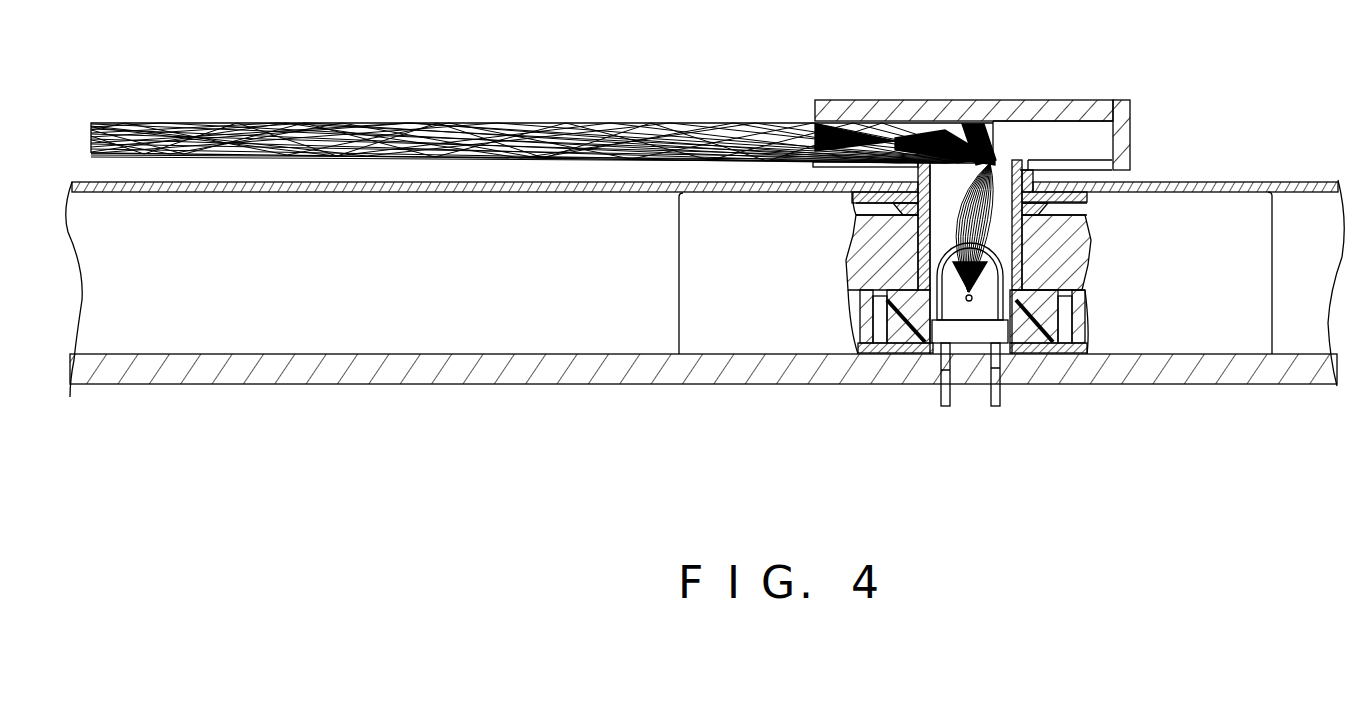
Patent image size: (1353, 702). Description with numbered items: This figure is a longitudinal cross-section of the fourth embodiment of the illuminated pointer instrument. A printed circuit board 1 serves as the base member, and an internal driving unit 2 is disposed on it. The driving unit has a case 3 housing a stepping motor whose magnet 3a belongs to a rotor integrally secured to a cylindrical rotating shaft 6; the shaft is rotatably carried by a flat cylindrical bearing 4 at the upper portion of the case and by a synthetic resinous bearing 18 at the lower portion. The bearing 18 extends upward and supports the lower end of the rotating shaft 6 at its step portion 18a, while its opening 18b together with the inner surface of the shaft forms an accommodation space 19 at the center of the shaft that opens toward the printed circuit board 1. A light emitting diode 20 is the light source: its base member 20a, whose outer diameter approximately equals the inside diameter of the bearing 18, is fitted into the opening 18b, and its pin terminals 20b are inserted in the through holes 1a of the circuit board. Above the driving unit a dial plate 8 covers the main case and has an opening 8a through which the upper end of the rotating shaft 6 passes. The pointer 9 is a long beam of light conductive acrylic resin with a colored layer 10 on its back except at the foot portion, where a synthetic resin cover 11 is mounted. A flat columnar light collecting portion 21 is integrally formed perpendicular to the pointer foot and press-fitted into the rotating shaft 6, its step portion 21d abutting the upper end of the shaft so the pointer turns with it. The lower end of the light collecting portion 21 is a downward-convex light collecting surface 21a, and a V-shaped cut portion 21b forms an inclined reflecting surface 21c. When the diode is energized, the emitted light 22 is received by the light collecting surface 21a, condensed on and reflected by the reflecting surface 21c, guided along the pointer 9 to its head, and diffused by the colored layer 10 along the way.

The printed circuit board 1 is at (768, 385).
The through holes 1a is at (948, 370).
The internal driving unit 2 is at (1277, 224).
The case 3 is at (1073, 347).
The magnet 3a is at (1063, 263).
The bearing 4 is at (1080, 222).
The rotating shaft 6 is at (918, 282).
The dial plate 8 is at (1253, 182).
The opening 8a is at (1130, 145).
The pointer 9 is at (706, 122).
The colored layer 10 is at (542, 164).
The cover 11 is at (1132, 100).
The bearing 18 is at (1037, 350).
The step portion 18a is at (1072, 290).
The opening 18b is at (930, 349).
The accommodation space 19 is at (913, 253).
The light emitting diode 20 is at (885, 330).
The base member 20a is at (1060, 322).
The pin terminals 20b is at (944, 410).
The light collecting portion 21 is at (880, 214).
The light collecting surface 21a is at (1020, 237).
The V-shaped cut portion 21b is at (1000, 178).
The reflecting surface 21c is at (965, 150).
The step portion 21d is at (900, 140).
The light 22 is at (1016, 140).